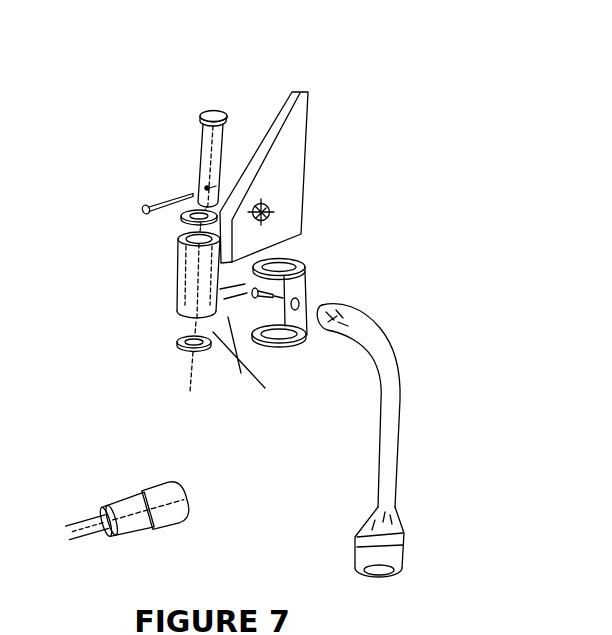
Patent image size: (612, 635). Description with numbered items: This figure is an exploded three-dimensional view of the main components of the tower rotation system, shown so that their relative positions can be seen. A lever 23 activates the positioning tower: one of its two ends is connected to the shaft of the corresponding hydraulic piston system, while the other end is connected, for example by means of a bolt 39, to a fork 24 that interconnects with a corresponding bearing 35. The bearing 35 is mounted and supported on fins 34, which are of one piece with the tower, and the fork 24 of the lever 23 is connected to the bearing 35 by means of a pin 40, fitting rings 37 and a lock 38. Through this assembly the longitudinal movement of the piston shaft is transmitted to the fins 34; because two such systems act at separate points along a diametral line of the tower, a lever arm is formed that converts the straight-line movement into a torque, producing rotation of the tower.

The lever 23 is at (397, 410).
The fork 24 is at (310, 258).
The fins 34 is at (292, 160).
The bearing 35 is at (170, 277).
The fitting rings 37 is at (167, 352).
The lock 38 is at (144, 197).
The bolt 39 is at (256, 300).
The pin 40 is at (205, 107).